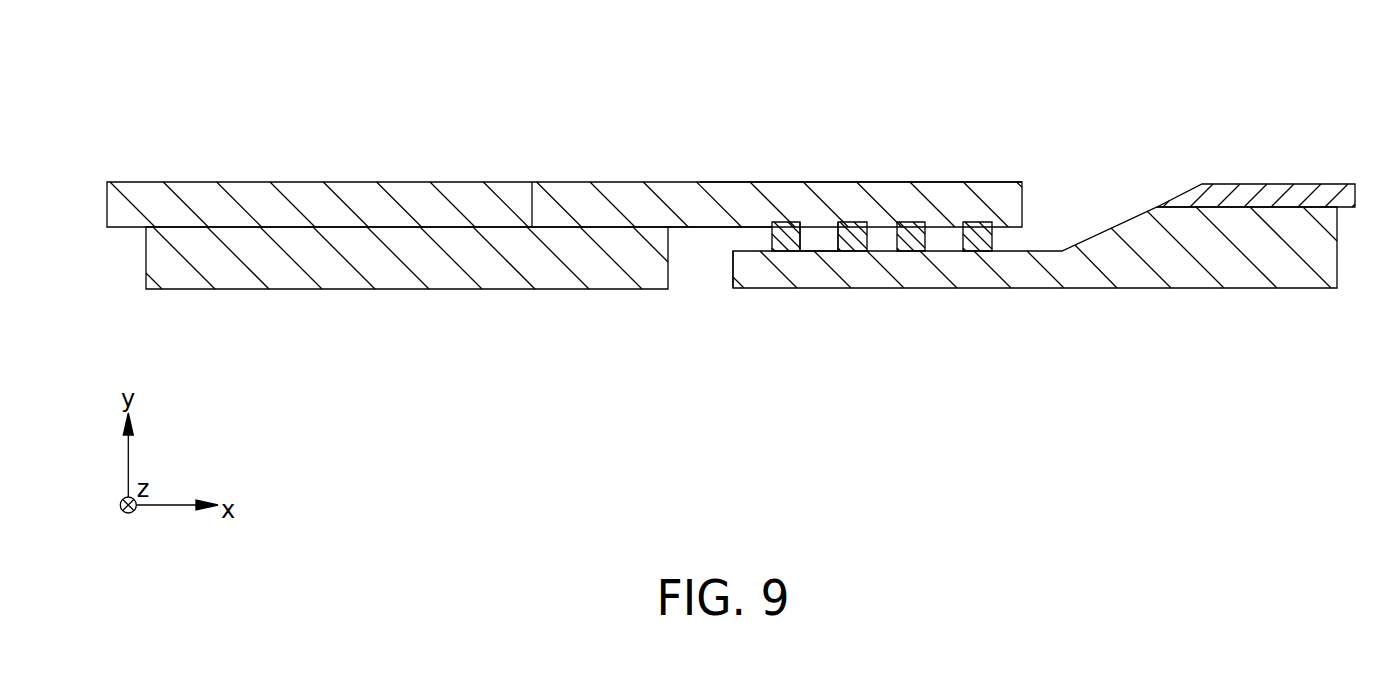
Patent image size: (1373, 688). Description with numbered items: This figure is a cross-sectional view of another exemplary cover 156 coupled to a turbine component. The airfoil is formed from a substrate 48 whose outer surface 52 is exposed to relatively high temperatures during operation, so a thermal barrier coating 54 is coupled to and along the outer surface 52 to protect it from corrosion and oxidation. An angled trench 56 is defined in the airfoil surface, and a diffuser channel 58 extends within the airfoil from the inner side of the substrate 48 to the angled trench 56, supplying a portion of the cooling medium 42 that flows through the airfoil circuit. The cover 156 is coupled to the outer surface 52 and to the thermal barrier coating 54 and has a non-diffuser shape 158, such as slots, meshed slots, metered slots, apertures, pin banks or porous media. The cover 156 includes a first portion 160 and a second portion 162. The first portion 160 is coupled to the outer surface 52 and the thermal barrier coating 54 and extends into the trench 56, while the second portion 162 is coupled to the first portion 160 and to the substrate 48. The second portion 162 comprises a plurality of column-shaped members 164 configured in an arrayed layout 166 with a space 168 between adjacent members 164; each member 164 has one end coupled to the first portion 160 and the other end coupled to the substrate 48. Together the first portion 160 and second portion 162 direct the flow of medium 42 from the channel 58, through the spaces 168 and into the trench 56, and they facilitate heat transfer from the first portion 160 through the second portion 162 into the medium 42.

The medium 42 is at (718, 268).
The substrate 48 is at (1033, 290).
The outer surface 52 is at (487, 200).
The thermal barrier coating 54 is at (363, 200).
The angled trench 56 is at (722, 233).
The diffuser channel 58 is at (668, 289).
The cover 156 is at (582, 200).
The non-diffuser shape 158 is at (866, 160).
The first portion 160 is at (762, 183).
The second portion 162 is at (950, 258).
The member 164 is at (993, 240).
The arrayed layout 166 is at (839, 275).
The space 168 is at (820, 237).